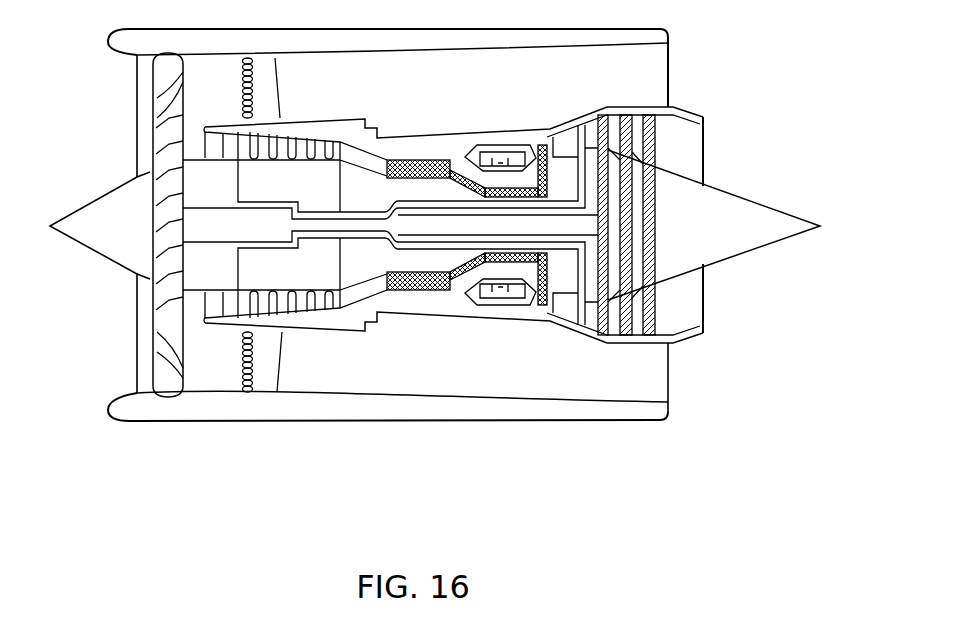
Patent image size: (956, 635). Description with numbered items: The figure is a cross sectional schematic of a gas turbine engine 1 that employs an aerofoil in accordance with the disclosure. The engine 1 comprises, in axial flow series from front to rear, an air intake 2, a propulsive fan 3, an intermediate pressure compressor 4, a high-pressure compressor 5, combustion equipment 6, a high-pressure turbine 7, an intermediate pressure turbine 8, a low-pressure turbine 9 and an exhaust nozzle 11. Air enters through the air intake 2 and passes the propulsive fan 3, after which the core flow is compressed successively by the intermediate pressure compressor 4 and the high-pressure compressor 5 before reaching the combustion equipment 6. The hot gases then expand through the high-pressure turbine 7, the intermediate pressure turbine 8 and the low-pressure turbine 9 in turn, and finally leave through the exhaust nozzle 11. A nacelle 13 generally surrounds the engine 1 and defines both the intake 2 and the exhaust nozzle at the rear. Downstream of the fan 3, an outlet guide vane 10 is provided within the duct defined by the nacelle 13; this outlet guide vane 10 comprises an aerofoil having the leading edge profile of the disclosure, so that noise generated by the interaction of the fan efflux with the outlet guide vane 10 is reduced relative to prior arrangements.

The gas turbine engine 1 is at (435, 286).
The air intake 2 is at (133, 90).
The propulsive fan 3 is at (170, 388).
The intermediate pressure compressor 4 is at (296, 170).
The high-pressure compressor 5 is at (413, 160).
The combustion equipment 6 is at (510, 306).
The high-pressure turbine 7 is at (557, 268).
The intermediate pressure turbine 8 is at (582, 332).
The low-pressure turbine 9 is at (649, 335).
The outlet guide vane 10 is at (265, 358).
The exhaust nozzle 11 is at (704, 148).
The nacelle 13 is at (370, 422).